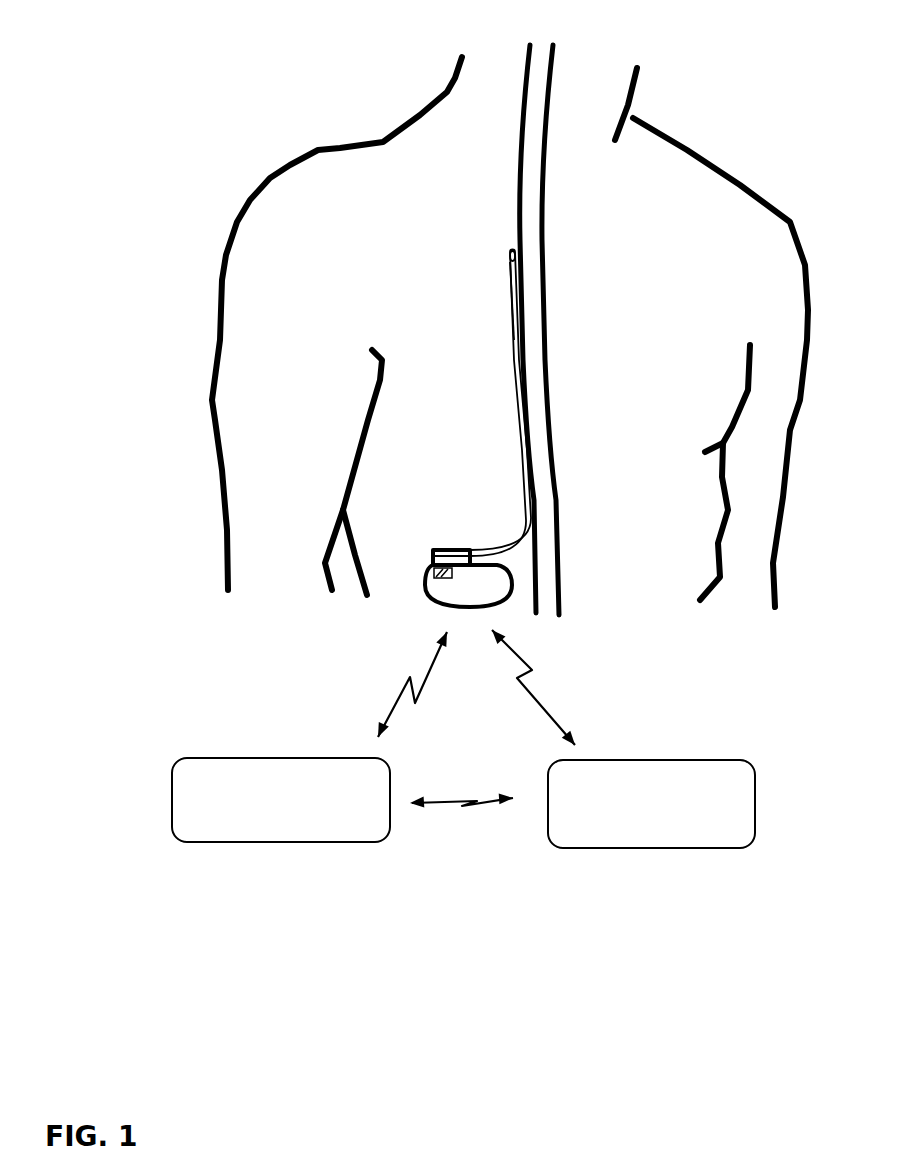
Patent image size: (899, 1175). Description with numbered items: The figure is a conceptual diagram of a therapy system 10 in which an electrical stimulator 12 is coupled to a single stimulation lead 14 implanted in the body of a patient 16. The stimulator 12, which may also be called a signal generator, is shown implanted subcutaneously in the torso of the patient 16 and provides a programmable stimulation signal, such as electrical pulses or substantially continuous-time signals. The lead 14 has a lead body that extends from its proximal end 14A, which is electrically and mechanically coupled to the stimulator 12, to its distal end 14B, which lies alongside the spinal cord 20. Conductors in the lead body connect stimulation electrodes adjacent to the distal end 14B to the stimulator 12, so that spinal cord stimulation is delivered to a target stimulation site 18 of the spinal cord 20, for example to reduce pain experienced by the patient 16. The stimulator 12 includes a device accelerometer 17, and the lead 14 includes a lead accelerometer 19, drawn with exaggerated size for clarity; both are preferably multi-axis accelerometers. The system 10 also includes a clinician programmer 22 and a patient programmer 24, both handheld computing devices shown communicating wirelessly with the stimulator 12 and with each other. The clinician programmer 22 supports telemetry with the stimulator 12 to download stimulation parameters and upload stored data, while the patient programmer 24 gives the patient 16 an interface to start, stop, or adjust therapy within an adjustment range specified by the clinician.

The therapy system 10 is at (118, 70).
The electrical stimulator 12 is at (425, 558).
The stimulation lead 14 is at (497, 370).
The proximal end of lead 14A is at (498, 548).
The distal end of lead 14B is at (510, 250).
The patient 16 is at (732, 150).
The device accelerometer 17 is at (433, 572).
The target stimulation site 18 is at (482, 278).
The lead accelerometer 19 is at (508, 258).
The spinal cord 20 is at (562, 182).
The clinician programmer 22 is at (222, 758).
The patient programmer 24 is at (717, 848).